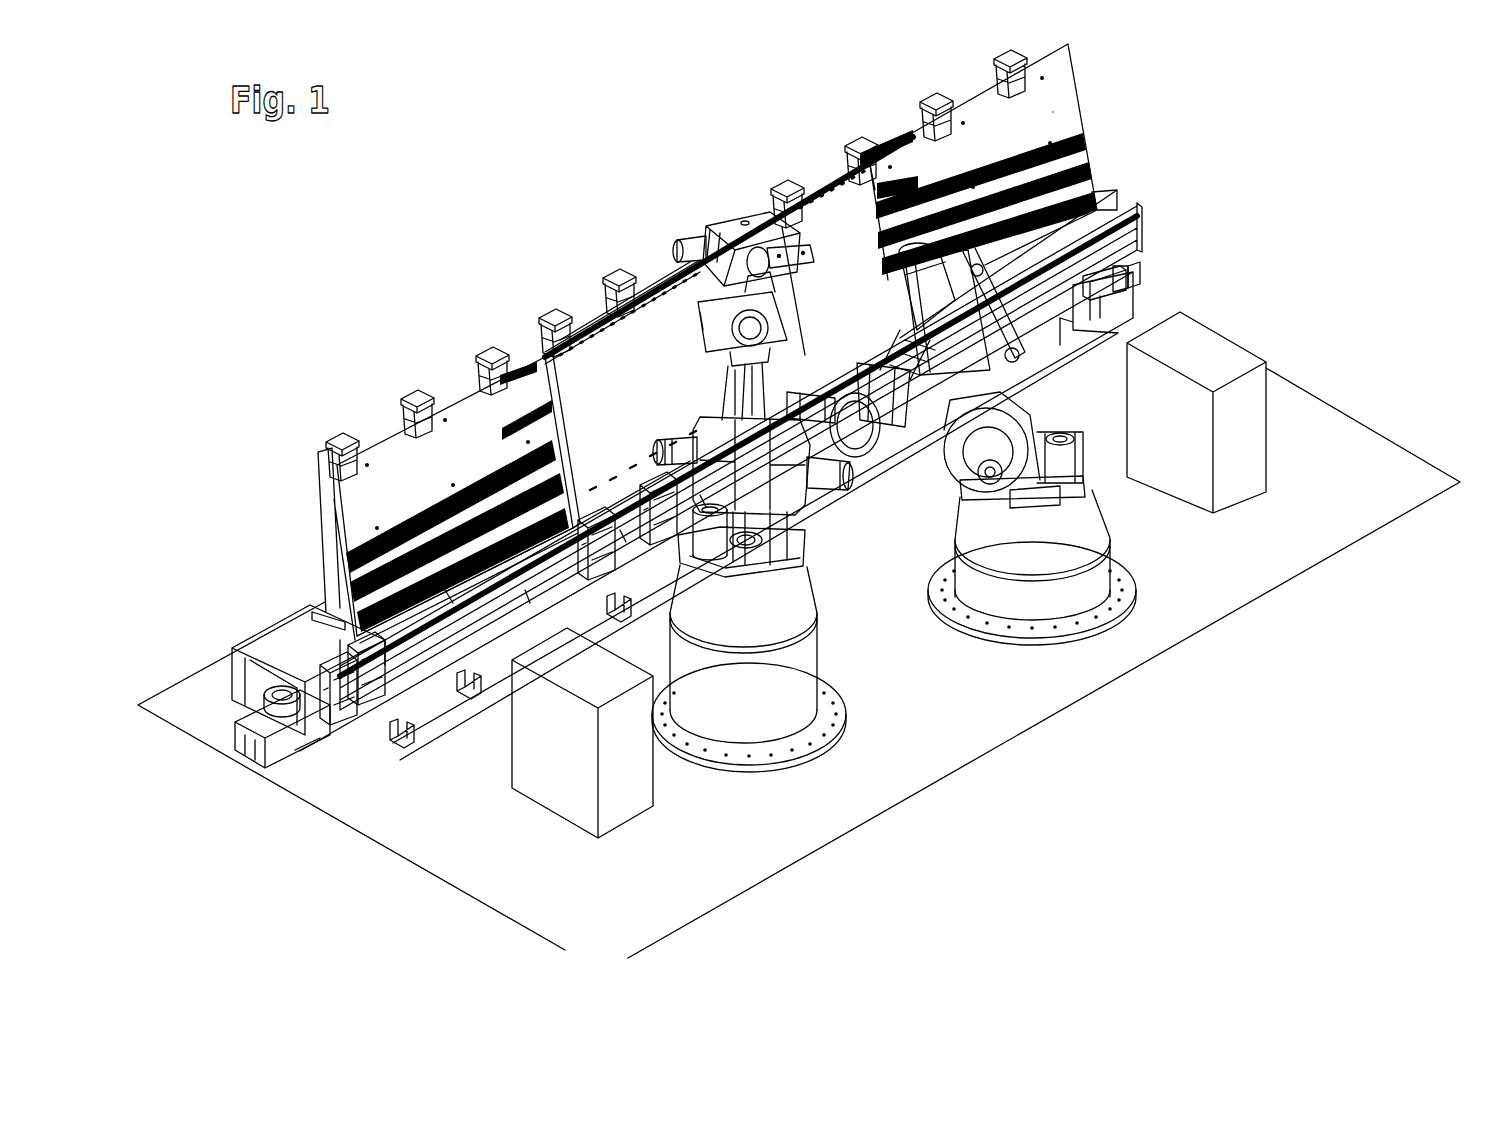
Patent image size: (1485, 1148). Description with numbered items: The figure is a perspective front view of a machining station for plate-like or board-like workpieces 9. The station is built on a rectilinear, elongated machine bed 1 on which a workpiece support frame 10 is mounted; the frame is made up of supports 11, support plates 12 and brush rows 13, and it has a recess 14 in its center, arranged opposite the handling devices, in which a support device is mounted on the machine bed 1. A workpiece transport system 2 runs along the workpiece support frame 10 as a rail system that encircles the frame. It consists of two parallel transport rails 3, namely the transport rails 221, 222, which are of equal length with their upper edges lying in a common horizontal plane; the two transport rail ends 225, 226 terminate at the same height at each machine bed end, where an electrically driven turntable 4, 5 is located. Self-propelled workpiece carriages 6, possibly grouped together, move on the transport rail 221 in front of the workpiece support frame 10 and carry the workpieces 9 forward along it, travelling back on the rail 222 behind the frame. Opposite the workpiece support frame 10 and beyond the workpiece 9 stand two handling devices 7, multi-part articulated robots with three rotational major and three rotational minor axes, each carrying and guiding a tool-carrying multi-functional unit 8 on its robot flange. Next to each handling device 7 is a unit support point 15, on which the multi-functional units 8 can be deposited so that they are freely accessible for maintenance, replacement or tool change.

The machine bed 1 is at (803, 490).
The workpiece transport system 2 is at (1148, 222).
The transport rail 3 is at (1113, 270).
The turntable 4 is at (272, 705).
The turntable 5 is at (780, 358).
The workpiece carriage 6 is at (363, 690).
The handling device 7 is at (880, 463).
The multi-functional unit 8 is at (780, 215).
The workpiece 9 is at (829, 220).
The workpiece support frame 10 is at (793, 340).
The supports 11 is at (563, 307).
The support plates 12 is at (1053, 112).
The brush rows 13 is at (1088, 146).
The recess 14 is at (650, 273).
The unit support point 15 is at (543, 786).
The transport rail 221 is at (1115, 290).
The transport rail 222 is at (293, 647).
The transport rail end 225 is at (432, 668).
The transport rail end 226 is at (1137, 260).